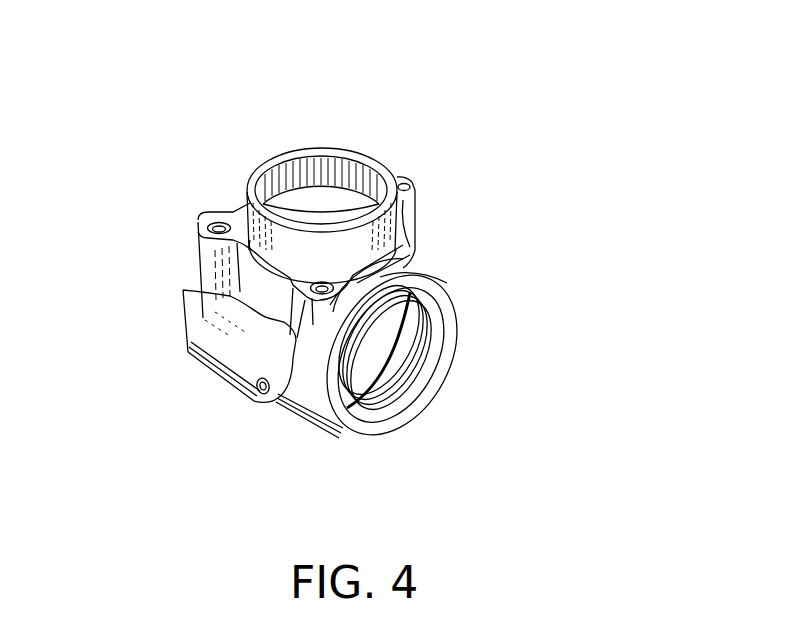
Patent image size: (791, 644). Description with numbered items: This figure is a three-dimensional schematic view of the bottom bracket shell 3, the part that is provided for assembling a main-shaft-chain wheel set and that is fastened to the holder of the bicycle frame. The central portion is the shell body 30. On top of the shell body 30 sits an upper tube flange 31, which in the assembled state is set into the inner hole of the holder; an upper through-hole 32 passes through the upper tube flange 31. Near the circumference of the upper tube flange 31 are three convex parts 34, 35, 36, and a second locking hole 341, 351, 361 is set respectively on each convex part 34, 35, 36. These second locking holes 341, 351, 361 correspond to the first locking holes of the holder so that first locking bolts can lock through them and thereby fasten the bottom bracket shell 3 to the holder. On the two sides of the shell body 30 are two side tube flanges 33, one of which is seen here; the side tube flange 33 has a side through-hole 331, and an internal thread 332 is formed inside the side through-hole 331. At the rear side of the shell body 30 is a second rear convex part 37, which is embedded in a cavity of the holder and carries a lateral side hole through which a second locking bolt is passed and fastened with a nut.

The bottom bracket shell 3 is at (457, 257).
The shell body 30 is at (265, 283).
The upper tube flange 31 is at (242, 213).
The upper through-hole 32 is at (323, 200).
The side tube flange 33 is at (312, 400).
The side through-hole 331 is at (380, 337).
The internal thread 332 is at (387, 410).
The convex part 34 is at (417, 211).
The second locking hole 341 is at (403, 181).
The convex part 35 is at (317, 393).
The second locking hole 351 is at (333, 289).
The convex part 36 is at (207, 255).
The second locking hole 361 is at (217, 223).
The second rear convex part 37 is at (223, 373).